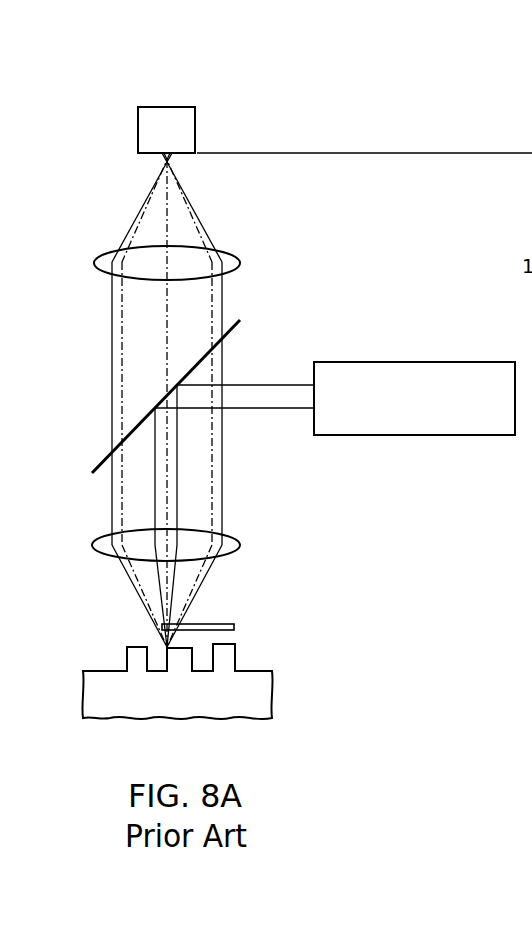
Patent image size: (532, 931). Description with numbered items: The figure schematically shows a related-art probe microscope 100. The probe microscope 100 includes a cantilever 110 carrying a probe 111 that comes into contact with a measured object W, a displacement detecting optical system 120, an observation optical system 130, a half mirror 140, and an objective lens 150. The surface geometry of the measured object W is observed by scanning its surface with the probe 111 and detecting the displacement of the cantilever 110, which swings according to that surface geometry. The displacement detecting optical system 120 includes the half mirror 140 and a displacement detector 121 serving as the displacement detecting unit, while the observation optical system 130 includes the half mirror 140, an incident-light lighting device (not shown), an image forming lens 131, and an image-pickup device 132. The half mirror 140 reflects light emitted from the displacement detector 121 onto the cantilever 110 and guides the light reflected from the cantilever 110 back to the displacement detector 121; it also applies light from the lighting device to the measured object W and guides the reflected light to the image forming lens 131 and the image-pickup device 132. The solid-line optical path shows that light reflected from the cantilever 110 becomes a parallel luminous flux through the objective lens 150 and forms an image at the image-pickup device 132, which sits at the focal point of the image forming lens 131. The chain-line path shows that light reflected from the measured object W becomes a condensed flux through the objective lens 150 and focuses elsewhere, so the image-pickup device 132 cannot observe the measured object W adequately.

The probe microscope 100 is at (200, 81).
The observation optical system 130 is at (231, 224).
The image-pickup device 132 is at (196, 126).
The image forming lens 131 is at (94, 264).
The half mirror 140 is at (93, 472).
The displacement detecting optical system 120 is at (246, 434).
The displacement detector 121 is at (451, 362).
The objective lens 150 is at (241, 546).
The cantilever 110 is at (232, 607).
The probe 111 is at (162, 636).
The measured object W is at (272, 692).